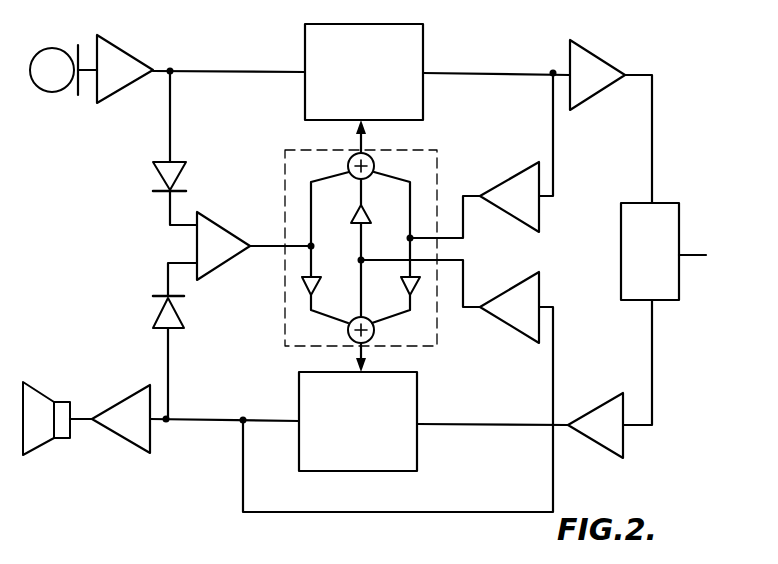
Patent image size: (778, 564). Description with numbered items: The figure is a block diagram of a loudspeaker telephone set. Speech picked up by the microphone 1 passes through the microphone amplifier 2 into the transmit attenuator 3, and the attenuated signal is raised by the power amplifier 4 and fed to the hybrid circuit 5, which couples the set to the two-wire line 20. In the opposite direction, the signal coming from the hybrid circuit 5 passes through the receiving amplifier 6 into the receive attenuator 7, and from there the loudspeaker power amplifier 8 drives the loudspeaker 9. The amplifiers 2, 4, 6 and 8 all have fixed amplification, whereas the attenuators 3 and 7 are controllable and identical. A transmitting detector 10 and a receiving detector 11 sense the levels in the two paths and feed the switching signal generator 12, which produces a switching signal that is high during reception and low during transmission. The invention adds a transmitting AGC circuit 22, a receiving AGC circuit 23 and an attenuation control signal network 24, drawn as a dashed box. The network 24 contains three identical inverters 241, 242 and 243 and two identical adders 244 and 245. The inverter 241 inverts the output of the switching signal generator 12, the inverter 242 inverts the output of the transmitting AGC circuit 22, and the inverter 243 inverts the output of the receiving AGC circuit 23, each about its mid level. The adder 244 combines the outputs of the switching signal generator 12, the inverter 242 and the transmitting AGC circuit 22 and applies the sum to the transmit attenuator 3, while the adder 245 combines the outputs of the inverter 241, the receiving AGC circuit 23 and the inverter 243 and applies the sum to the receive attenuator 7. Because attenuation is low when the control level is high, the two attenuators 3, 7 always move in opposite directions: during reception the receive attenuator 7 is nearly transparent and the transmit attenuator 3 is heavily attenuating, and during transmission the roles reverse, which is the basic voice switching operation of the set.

The microphone 1 is at (62, 45).
The microphone amplifier 2 is at (130, 48).
The transmit attenuator 3 is at (425, 37).
The power amplifier 4 is at (592, 53).
The hybrid circuit 5 is at (632, 195).
The receiving amplifier 6 is at (588, 412).
The receive attenuator 7 is at (402, 473).
The loudspeaker power amplifier 8 is at (135, 445).
The loudspeaker 9 is at (40, 445).
The transmitting detector 10 is at (155, 179).
The receiving detector 11 is at (155, 315).
The switching signal generator 12 is at (225, 227).
The two-wire line 20 is at (687, 248).
The transmitting AGC circuit 22 is at (490, 190).
The receiving AGC circuit 23 is at (510, 325).
The attenuation control signal network 24 is at (293, 147).
The inverter 241 is at (302, 284).
The inverter 242 is at (370, 214).
The inverter 243 is at (413, 295).
The adder 244 is at (373, 157).
The adder 245 is at (372, 346).